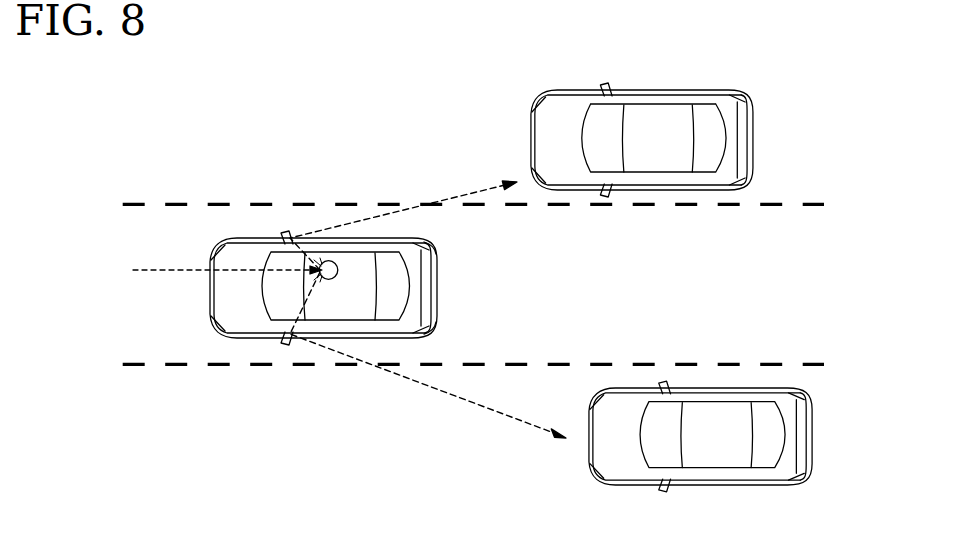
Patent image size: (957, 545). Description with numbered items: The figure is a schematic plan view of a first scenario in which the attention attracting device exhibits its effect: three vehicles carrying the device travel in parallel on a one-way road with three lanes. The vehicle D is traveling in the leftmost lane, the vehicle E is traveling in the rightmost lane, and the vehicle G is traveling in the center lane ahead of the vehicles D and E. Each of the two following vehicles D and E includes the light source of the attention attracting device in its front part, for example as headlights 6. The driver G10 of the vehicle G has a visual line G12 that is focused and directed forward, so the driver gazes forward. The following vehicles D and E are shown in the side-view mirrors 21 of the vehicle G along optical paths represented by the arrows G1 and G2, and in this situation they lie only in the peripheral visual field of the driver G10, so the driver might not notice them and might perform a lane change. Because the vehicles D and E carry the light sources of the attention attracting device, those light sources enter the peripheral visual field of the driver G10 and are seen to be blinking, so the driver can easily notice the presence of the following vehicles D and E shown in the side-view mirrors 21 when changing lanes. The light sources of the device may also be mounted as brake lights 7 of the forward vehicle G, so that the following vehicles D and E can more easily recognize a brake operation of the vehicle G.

The side-view mirror 21 is at (287, 238).
The headlight 6 is at (671, 282).
The brake light 7 is at (437, 240).
The vehicle G is at (323, 288).
The vehicle E is at (642, 140).
The vehicle D is at (700, 436).
The arrow G1 is at (365, 215).
The arrow G2 is at (467, 405).
The driver G10 is at (327, 281).
The visual line G12 is at (167, 272).